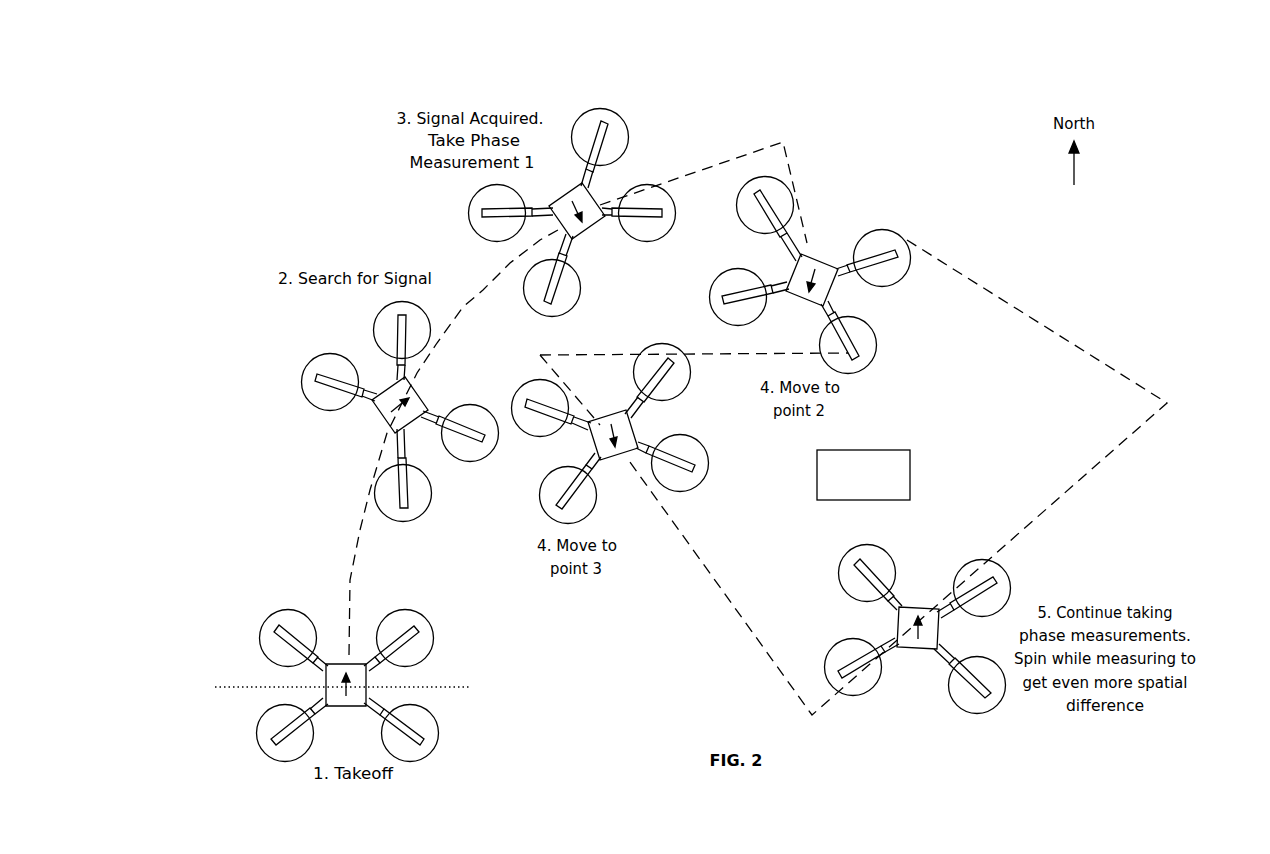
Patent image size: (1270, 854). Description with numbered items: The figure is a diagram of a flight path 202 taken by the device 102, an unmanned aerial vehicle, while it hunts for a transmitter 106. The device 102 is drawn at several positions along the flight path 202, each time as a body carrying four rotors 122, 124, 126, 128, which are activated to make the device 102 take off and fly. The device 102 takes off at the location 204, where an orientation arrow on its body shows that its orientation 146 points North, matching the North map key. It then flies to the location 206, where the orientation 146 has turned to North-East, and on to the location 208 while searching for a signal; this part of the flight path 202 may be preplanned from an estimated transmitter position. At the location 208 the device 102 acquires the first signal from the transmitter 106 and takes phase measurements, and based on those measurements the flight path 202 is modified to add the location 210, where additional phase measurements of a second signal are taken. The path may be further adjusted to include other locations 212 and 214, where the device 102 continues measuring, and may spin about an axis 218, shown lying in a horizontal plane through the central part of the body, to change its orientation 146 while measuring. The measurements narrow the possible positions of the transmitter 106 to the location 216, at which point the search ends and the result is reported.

The device 102 is at (395, 676).
The transmitter 106 is at (887, 467).
The rotor 122 is at (284, 764).
The rotor 124 is at (262, 657).
The rotor 126 is at (428, 762).
The rotor 128 is at (432, 660).
The orientation 146 is at (325, 694).
The flight path 202 is at (352, 552).
The location 204 is at (352, 662).
The location 206 is at (388, 432).
The location 208 is at (558, 230).
The location 210 is at (810, 252).
The location 212 is at (603, 412).
The location 214 is at (907, 652).
The location 216 is at (880, 450).
The axis 218 is at (470, 688).